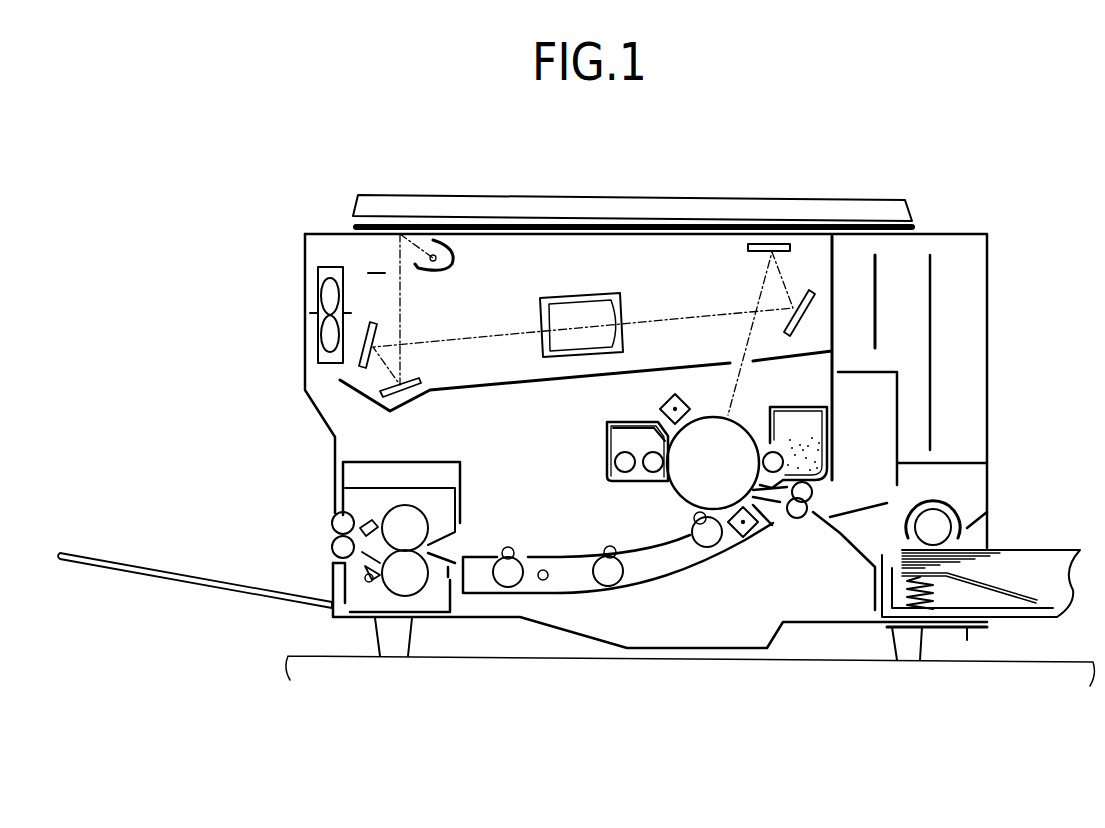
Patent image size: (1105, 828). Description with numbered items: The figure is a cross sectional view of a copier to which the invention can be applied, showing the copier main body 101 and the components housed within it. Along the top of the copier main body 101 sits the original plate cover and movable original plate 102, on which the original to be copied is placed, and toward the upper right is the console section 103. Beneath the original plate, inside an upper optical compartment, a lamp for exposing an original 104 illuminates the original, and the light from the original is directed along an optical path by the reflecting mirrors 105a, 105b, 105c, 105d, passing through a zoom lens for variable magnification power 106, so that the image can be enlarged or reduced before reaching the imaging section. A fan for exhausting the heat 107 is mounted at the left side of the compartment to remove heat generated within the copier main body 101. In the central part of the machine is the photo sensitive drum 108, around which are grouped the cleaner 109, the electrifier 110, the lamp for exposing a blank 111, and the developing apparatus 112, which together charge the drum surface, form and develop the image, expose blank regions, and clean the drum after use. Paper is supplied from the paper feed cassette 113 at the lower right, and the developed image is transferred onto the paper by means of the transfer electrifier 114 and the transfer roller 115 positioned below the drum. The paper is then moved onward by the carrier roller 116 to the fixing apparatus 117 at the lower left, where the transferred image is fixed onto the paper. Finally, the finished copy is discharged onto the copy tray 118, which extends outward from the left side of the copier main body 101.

The copier main body 101 is at (978, 333).
The original plate cover and movable original plate 102 is at (875, 202).
The console section 103 is at (933, 233).
The lamp for exposing an original 104 is at (448, 258).
The reflecting mirror 105a is at (376, 315).
The reflecting mirror 105b is at (443, 368).
The reflecting mirror 105c is at (800, 322).
The reflecting mirror 105d is at (771, 252).
The zoom lens 106 is at (624, 300).
The fan 107 is at (305, 296).
The photo sensitive drum 108 is at (688, 390).
The cleaner 109 is at (610, 440).
The electrifier 110 is at (660, 407).
The lamp for exposing a blank 111 is at (706, 427).
The developing apparatus 112 is at (783, 408).
The paper feed cassette 113 is at (1037, 550).
The transfer electrifier 114 is at (760, 532).
The transfer roller 115 is at (703, 563).
The carrier roller 116 is at (608, 582).
The fixing apparatus 117 is at (452, 477).
The copy tray 118 is at (177, 578).